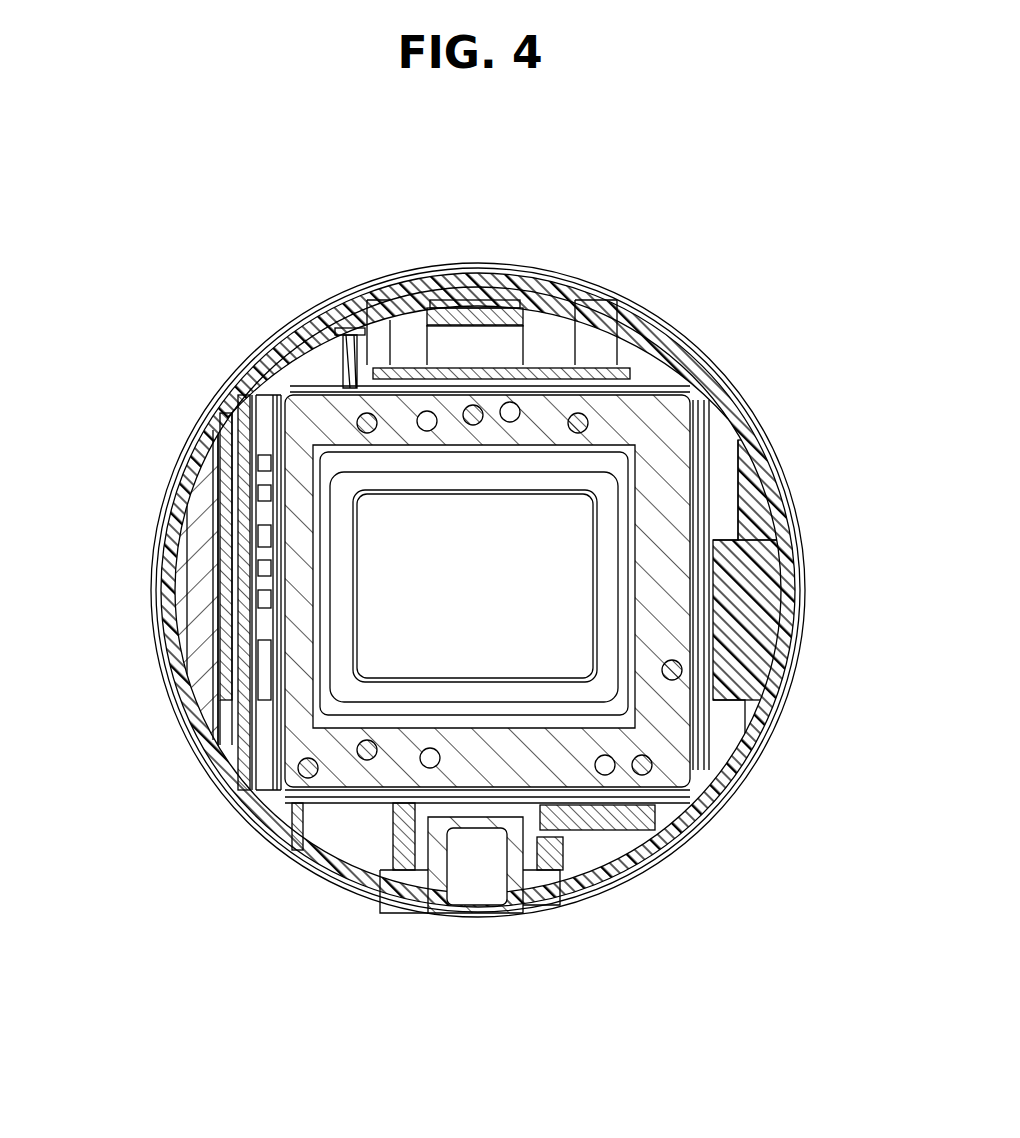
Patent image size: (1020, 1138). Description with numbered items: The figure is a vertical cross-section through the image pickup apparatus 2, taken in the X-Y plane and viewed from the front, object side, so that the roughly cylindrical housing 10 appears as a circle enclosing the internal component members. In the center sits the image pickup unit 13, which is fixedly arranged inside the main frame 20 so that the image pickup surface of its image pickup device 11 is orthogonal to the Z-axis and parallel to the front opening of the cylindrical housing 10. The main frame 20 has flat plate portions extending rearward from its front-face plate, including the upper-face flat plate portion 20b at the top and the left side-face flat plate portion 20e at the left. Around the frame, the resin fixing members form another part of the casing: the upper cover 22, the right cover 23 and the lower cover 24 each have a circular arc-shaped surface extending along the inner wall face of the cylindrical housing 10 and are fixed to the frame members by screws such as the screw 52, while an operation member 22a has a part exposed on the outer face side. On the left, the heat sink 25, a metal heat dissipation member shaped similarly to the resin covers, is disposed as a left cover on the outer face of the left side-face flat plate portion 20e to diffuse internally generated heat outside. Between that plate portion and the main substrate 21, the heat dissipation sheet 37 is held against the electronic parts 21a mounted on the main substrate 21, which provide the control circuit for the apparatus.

The image pickup apparatus 2 is at (668, 156).
The cylindrical housing 10 is at (757, 440).
The image pickup device 11 is at (568, 553).
The image pickup unit 13 is at (618, 413).
The main frame 20 is at (278, 475).
The upper-face flat plate portion 20b is at (435, 382).
The left side-face flat plate portion 20e is at (217, 525).
The main substrate 21 is at (250, 417).
The electronic parts 21a is at (243, 437).
The upper cover 22 is at (520, 288).
The operation member 22a is at (600, 307).
The right cover 23 is at (760, 580).
The lower cover 24 is at (362, 878).
The heat sink 25 is at (183, 643).
The heat dissipation sheet 37 is at (245, 502).
The screw 52 is at (345, 335).